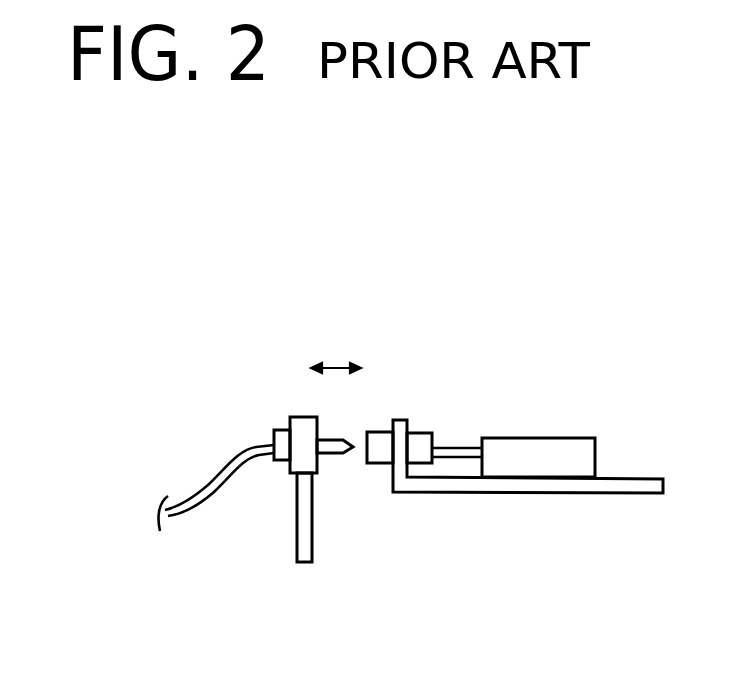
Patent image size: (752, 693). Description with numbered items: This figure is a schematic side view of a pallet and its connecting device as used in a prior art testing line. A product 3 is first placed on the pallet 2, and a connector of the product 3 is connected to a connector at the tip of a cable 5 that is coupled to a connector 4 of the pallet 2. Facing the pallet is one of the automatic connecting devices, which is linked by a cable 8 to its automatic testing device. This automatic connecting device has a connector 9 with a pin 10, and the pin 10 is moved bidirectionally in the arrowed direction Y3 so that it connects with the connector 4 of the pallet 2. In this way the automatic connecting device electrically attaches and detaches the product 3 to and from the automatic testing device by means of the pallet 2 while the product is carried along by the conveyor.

The pallet 2 is at (635, 494).
The product 3 is at (545, 438).
The connector 4 is at (423, 433).
The cable 5 is at (460, 448).
The cable 8 is at (222, 468).
The connector 9 is at (300, 417).
The pin 10 is at (333, 437).
The arrowed direction Y3 is at (338, 366).